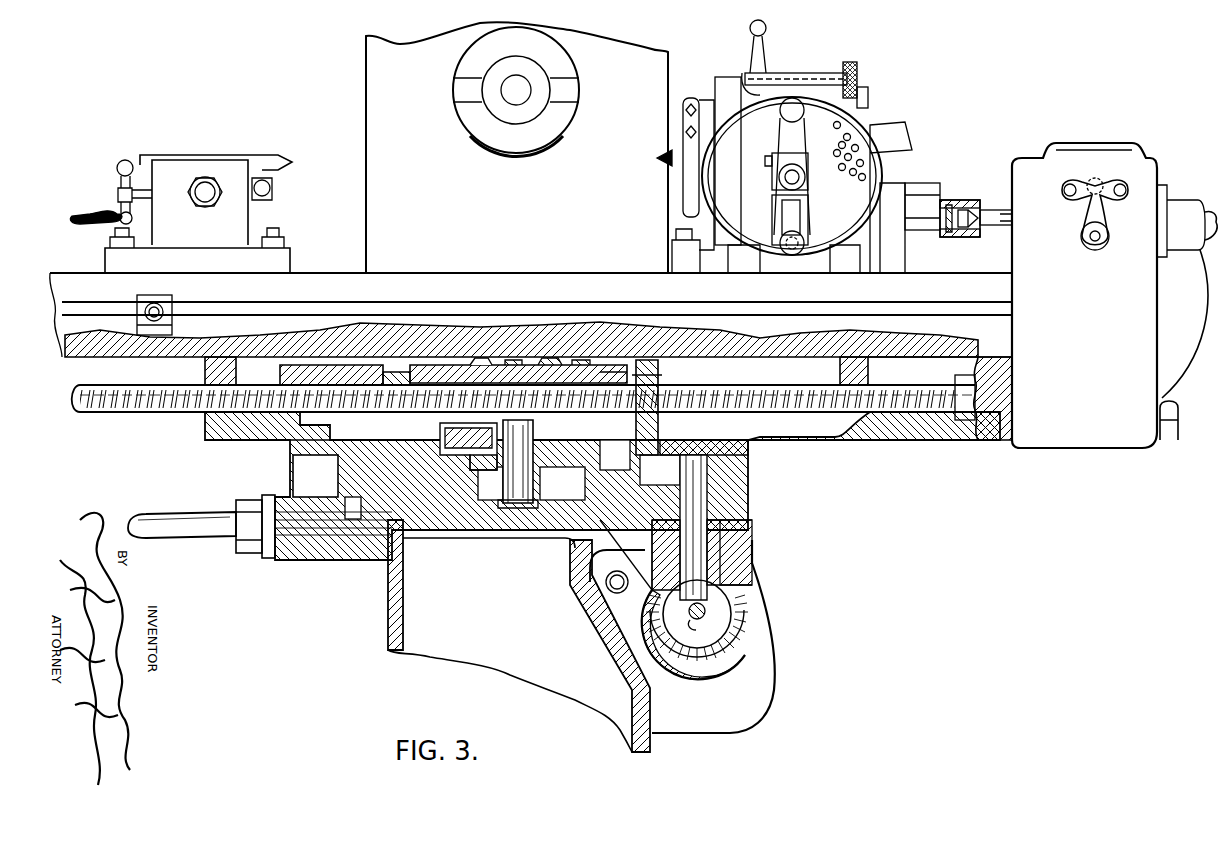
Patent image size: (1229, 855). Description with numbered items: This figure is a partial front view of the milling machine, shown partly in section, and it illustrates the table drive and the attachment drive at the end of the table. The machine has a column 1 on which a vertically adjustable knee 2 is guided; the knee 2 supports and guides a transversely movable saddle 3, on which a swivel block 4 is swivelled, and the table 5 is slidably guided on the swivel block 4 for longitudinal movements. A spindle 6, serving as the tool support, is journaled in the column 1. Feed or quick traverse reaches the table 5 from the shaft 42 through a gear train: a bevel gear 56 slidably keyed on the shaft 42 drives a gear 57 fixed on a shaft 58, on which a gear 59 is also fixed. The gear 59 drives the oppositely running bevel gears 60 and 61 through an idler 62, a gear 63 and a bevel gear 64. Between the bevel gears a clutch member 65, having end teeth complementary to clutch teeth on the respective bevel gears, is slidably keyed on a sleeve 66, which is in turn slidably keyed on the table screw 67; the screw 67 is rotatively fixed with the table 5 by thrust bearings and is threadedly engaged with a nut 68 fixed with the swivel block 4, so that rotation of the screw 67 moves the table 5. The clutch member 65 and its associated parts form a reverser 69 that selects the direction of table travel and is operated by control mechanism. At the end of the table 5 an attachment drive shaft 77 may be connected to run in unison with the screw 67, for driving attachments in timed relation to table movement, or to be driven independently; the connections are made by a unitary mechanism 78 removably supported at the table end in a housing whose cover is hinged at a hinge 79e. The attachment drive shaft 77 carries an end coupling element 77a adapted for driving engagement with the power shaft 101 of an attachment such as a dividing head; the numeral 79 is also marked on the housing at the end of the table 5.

The column 1 is at (366, 166).
The knee 2 is at (388, 630).
The saddle 3 is at (292, 447).
The swivel block 4 is at (218, 445).
The table 5 is at (500, 273).
The spindle 6 is at (555, 122).
The shaft 42 is at (697, 632).
The bevel gear 56 is at (742, 655).
The gear 57 is at (752, 585).
The shaft 58 is at (697, 490).
The gear 59 is at (748, 451).
The bevel gear 60 is at (483, 362).
The bevel gear 61 is at (572, 372).
The idler 62 is at (566, 488).
The gear 63 is at (470, 463).
The bevel gear 64 is at (445, 460).
The clutch member 65 is at (546, 363).
The sleeve 66 is at (658, 366).
The table screw 67 is at (398, 383).
The nut 68 is at (358, 377).
The reverser 69 is at (519, 354).
The attachment drive shaft 77 is at (994, 232).
The end coupling element 77a is at (966, 237).
The unitary mechanism 78 is at (1031, 148).
The tailstock clamp handle 79 is at (1130, 165).
The hinge 79e is at (1178, 425).
The shaft 101 is at (945, 215).